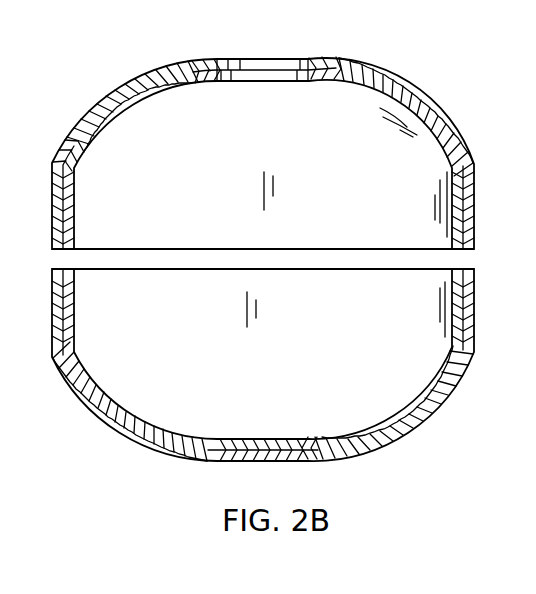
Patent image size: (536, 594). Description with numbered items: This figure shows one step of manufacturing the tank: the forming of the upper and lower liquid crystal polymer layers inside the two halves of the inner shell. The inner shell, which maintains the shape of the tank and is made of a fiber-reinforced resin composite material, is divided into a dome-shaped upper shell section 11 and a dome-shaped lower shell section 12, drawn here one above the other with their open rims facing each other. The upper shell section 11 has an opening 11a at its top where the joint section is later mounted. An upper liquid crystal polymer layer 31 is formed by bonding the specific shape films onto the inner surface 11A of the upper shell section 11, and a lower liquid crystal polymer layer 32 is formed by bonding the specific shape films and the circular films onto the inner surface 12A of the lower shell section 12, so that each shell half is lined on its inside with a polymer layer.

The upper shell section 11 is at (263, 126).
The opening 11a is at (303, 63).
The inner surface of the upper shell section 11A is at (350, 86).
The upper liquid crystal polymer layer 31 is at (74, 180).
The lower shell section 12 is at (263, 375).
The inner surface of the lower shell section 12A is at (368, 427).
The lower liquid crystal polymer layer 32 is at (80, 360).